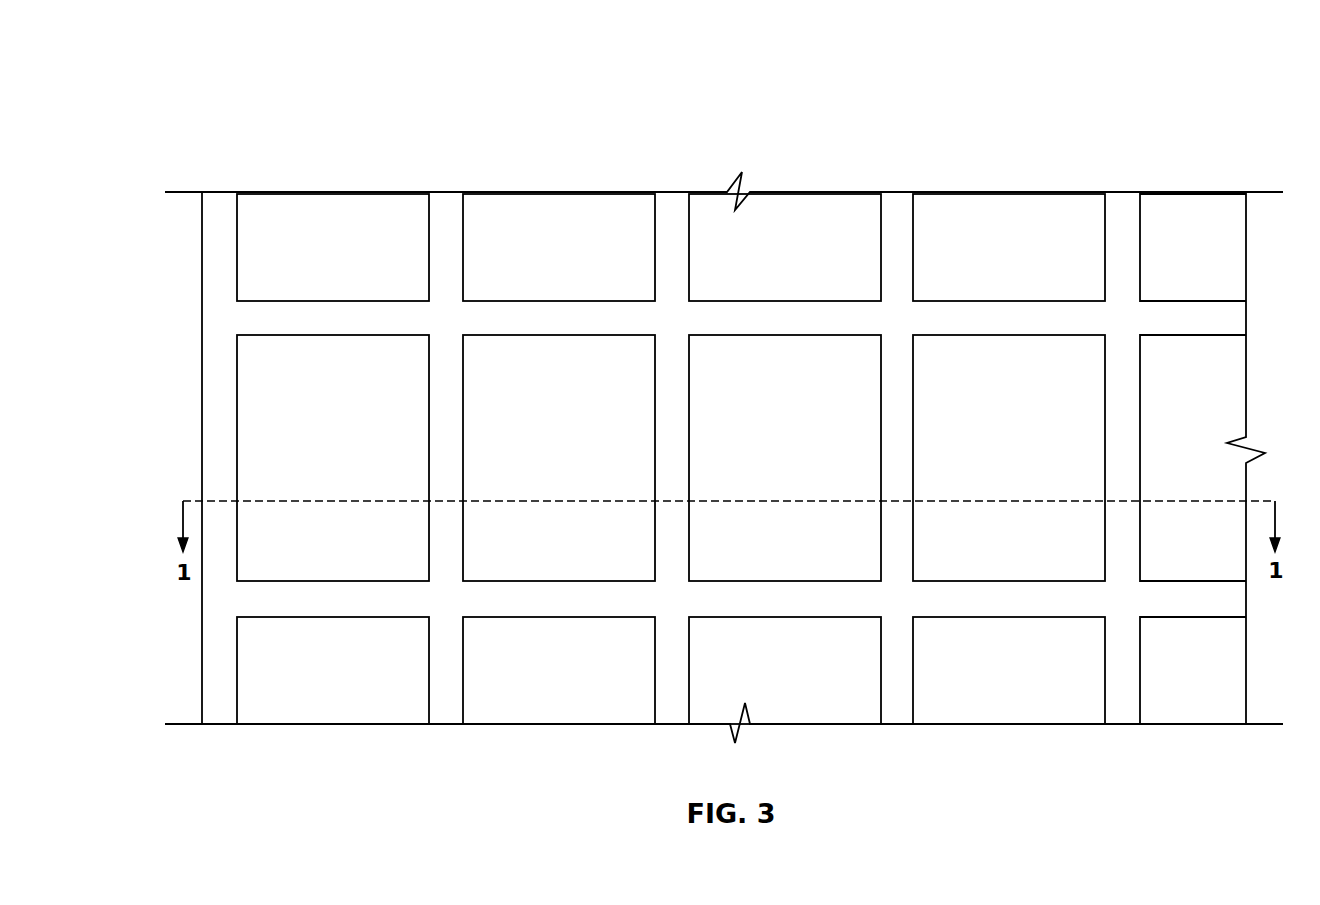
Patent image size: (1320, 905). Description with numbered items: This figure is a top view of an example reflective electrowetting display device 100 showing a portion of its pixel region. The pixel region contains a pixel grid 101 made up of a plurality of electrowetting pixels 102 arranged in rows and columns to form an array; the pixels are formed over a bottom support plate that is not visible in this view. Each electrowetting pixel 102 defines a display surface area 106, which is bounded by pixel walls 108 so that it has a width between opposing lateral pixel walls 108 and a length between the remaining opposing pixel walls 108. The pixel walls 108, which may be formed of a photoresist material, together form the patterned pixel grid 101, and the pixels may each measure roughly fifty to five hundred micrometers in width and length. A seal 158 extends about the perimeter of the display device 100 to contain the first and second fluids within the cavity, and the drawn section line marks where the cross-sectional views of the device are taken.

The reflective electrowetting display device 100 is at (1008, 63).
The pixel grid 101 is at (775, 168).
The electrowetting pixels 102 is at (1216, 259).
The display surface area 106 is at (324, 567).
The pixel walls 108 is at (447, 232).
The seal 158 is at (220, 258).